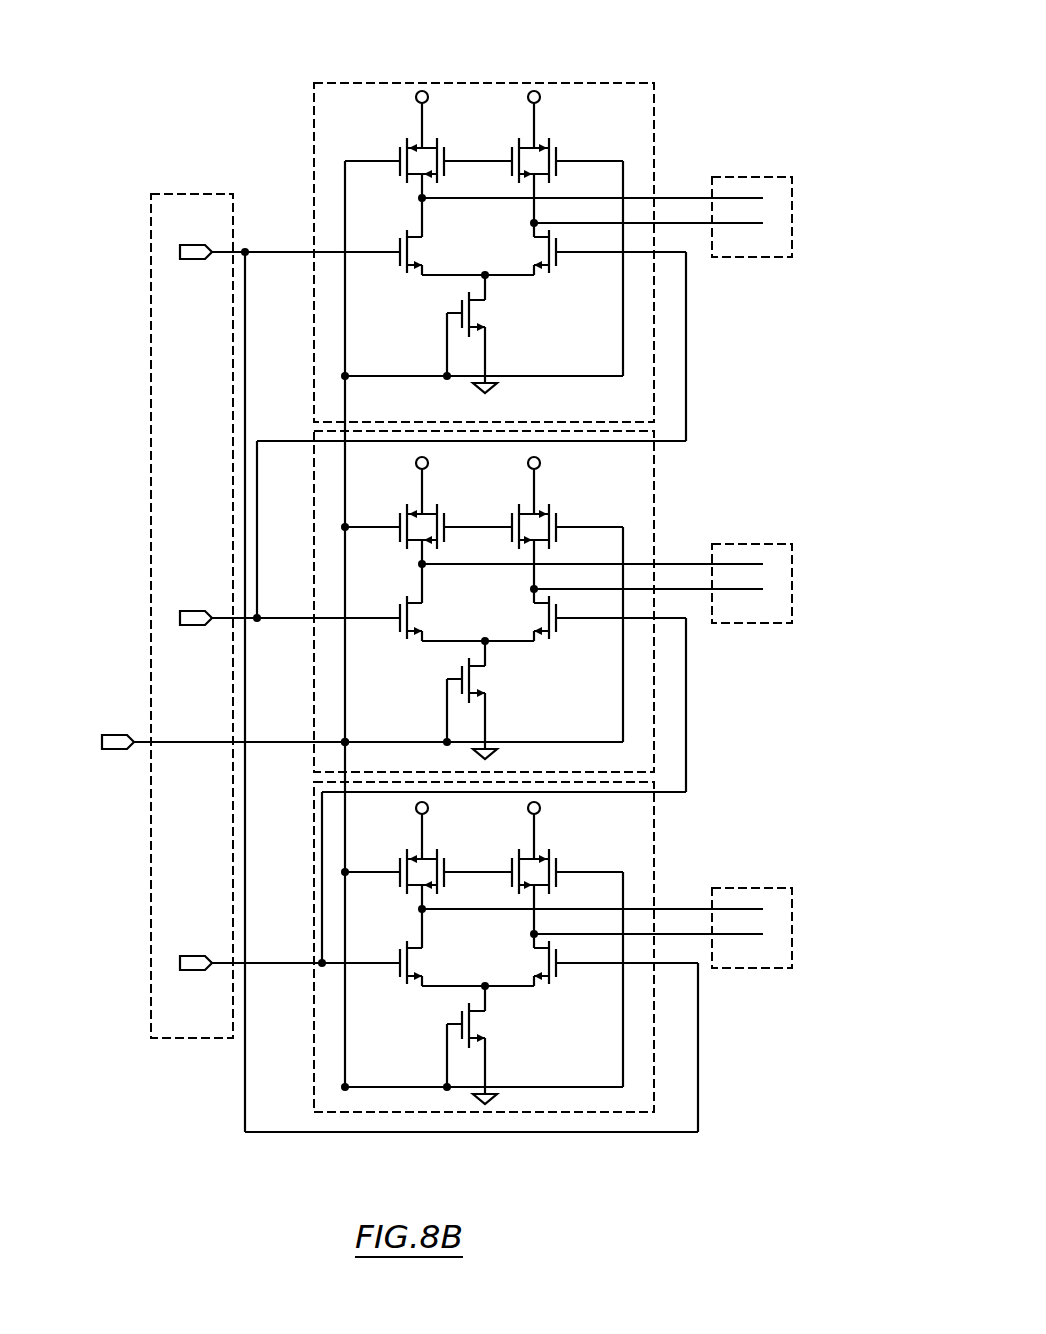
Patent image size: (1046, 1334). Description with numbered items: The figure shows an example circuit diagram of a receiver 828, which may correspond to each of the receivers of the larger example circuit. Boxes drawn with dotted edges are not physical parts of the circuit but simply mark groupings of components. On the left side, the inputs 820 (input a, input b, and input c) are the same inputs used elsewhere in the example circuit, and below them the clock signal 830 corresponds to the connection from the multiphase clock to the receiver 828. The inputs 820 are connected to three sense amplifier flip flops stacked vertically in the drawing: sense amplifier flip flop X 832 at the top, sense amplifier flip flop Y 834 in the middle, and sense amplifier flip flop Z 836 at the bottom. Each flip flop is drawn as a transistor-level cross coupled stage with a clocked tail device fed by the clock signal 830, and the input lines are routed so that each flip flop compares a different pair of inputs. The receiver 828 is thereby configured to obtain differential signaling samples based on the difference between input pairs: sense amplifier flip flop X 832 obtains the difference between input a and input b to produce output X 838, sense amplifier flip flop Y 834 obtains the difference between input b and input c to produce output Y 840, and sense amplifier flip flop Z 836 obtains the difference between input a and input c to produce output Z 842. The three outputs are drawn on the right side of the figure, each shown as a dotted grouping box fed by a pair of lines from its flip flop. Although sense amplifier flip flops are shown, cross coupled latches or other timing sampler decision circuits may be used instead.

The receiver 828 is at (186, 85).
The inputs 820 is at (178, 1038).
The clock signal 830 is at (112, 750).
The sense amplifier flip flop X 832 is at (654, 90).
The sense amplifier flip flop Y 834 is at (654, 462).
The sense amplifier flip flop Z 836 is at (654, 812).
The output X 838 is at (750, 257).
The output Y 840 is at (770, 623).
The output Z 842 is at (735, 968).